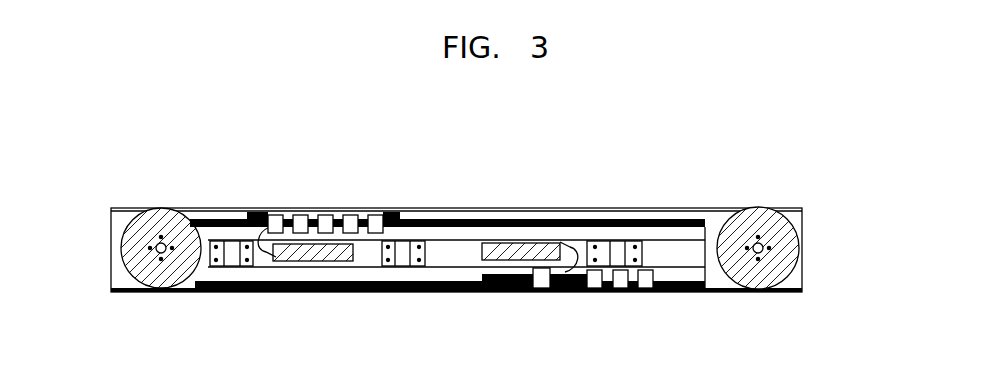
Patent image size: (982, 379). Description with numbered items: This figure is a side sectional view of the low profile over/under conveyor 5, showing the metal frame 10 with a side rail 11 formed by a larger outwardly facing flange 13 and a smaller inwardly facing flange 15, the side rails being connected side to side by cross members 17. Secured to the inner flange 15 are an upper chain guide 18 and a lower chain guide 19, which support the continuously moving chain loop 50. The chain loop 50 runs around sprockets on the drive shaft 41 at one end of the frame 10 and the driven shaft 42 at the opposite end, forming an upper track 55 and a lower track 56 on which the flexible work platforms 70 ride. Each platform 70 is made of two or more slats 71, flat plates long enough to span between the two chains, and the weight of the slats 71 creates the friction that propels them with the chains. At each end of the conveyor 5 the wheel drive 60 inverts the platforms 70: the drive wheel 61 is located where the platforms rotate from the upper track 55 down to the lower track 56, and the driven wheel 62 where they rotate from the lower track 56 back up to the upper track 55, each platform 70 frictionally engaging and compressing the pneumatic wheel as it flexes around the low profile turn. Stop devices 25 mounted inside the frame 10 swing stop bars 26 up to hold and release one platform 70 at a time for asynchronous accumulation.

The conveyor 5 is at (578, 146).
The frame 10 is at (610, 208).
The side rail 11 is at (672, 209).
The outwardly facing flange 13 is at (708, 292).
The inwardly facing flange 15 is at (689, 262).
The cross member 17 is at (228, 268).
The upper chain guide 18 is at (463, 217).
The lower chain guide 19 is at (442, 292).
The stop device 25 is at (300, 262).
The stop bar 26 is at (270, 262).
The drive shaft 41 is at (195, 278).
The driven shaft 42 is at (787, 293).
The chain loop 50 is at (423, 213).
The upper track 55 is at (395, 208).
The lower track 56 is at (493, 284).
The wheel drive 60 is at (157, 200).
The drive wheel 61 is at (190, 212).
The driven wheel 62 is at (753, 208).
The flexible work platform 70 is at (298, 200).
The slat 71 is at (347, 212).